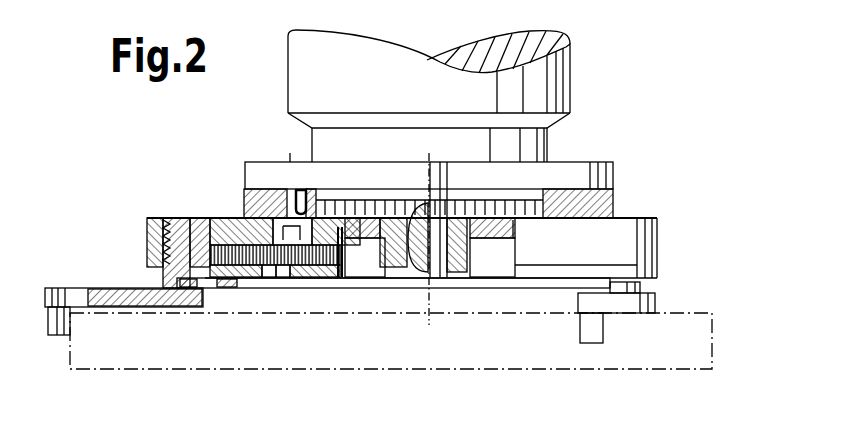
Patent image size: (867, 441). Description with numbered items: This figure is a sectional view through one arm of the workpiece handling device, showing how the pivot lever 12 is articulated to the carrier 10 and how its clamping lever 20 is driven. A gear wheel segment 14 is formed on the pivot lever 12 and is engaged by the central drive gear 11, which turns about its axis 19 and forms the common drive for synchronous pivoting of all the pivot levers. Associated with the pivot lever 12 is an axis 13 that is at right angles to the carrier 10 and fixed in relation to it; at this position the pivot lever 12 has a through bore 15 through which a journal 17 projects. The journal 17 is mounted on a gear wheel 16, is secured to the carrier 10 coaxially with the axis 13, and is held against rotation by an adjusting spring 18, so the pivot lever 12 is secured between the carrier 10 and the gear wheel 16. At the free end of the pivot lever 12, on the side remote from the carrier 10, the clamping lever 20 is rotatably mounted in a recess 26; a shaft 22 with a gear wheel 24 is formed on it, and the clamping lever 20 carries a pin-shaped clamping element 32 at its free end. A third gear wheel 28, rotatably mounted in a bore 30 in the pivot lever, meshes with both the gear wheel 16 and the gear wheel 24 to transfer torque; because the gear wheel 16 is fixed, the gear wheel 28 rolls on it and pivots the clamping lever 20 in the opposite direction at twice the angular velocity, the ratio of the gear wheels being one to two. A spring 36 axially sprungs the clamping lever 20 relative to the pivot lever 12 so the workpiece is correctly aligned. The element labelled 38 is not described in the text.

The carrier 10 is at (605, 206).
The central drive gear 11 is at (472, 279).
The pivot lever 12 is at (665, 243).
The axis 13 is at (290, 187).
The gear wheel segment 14 is at (368, 279).
The through bore 15 is at (300, 279).
The gear wheel 16 is at (290, 279).
The journal 17 is at (274, 279).
The adjusting spring 18 is at (307, 188).
The axis of the drive gear wheel 19 is at (423, 308).
The clamping lever 20 is at (88, 282).
The shaft 22 is at (633, 287).
The gear wheel 24 is at (152, 217).
The recess 26 is at (148, 217).
The third gear wheel 28 is at (231, 289).
The bore 30 is at (220, 217).
The clamping element 32 is at (58, 337).
The spring 36 is at (176, 217).
The base plate 38 is at (596, 372).